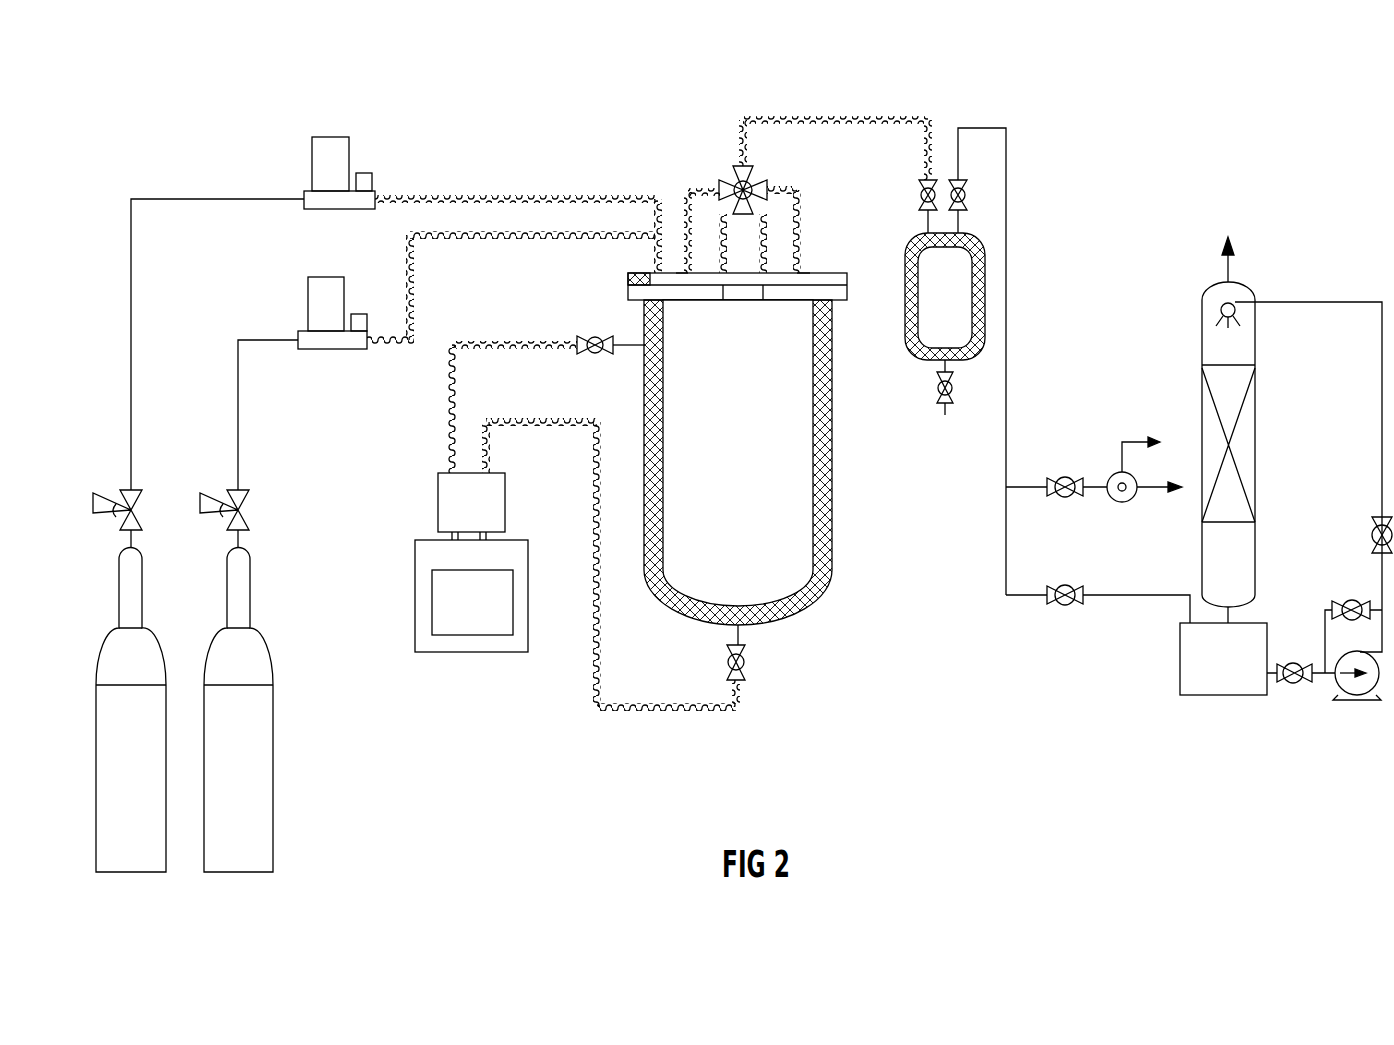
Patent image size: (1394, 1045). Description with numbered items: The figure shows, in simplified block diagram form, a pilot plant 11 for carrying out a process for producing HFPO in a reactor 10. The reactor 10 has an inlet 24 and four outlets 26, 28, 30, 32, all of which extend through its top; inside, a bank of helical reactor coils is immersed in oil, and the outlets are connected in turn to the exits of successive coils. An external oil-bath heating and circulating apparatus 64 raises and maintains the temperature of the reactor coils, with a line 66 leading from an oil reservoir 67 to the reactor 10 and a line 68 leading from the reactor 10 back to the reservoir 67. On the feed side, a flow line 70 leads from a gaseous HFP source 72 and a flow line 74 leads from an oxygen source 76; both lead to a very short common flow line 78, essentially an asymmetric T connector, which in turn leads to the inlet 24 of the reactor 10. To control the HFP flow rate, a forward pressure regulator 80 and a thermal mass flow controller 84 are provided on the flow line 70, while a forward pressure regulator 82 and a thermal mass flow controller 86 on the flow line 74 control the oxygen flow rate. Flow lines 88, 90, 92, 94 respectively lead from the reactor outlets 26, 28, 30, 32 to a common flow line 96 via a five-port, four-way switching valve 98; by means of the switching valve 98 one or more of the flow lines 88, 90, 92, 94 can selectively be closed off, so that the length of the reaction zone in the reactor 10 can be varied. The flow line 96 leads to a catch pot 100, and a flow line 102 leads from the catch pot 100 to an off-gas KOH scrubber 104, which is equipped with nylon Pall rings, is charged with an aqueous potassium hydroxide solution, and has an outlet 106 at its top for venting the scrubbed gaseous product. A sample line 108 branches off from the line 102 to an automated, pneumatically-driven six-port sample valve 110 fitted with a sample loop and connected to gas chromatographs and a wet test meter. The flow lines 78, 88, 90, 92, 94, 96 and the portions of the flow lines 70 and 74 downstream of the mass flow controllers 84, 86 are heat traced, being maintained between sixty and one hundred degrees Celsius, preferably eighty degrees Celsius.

The reactor 10 is at (845, 608).
The pilot plant 11 is at (1350, 198).
The inlet 24 is at (637, 280).
The outlet 26 is at (682, 270).
The outlet 28 is at (728, 288).
The outlet 30 is at (769, 290).
The outlet 32 is at (806, 272).
The oil-bath heating and circulating apparatus 64 is at (478, 670).
The line 66 is at (665, 710).
The oil reservoir 67 is at (415, 580).
The line 68 is at (452, 378).
The flow line 70 is at (130, 307).
The gaseous HFP source 72 is at (150, 705).
The flow line 74 is at (237, 418).
The oxygen source 76 is at (257, 750).
The common flow line 78 is at (653, 253).
The forward pressure regulator 80 is at (121, 522).
The forward pressure regulator 82 is at (240, 522).
The thermal mass flow controller 84 is at (325, 200).
The thermal mass flow controller 86 is at (318, 340).
The flow line 88 is at (702, 188).
The flow line 90 is at (721, 250).
The flow line 92 is at (767, 255).
The flow line 94 is at (800, 223).
The common flow line 96 is at (858, 118).
The switching valve 98 is at (752, 186).
The catch pot 100 is at (915, 350).
The flow line 102 is at (1006, 180).
The off-gas KOH scrubber 104 is at (1258, 278).
The outlet 106 is at (1226, 270).
The sample line 108 is at (1022, 480).
The sample valve 110 is at (1122, 490).